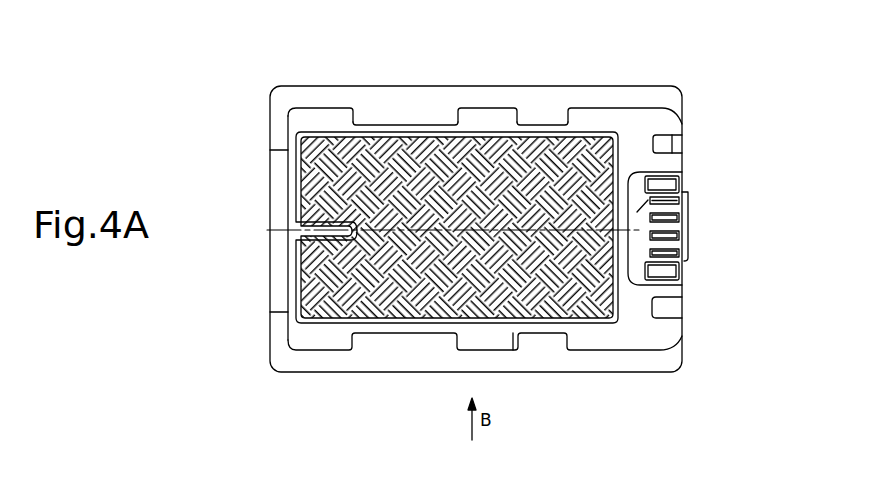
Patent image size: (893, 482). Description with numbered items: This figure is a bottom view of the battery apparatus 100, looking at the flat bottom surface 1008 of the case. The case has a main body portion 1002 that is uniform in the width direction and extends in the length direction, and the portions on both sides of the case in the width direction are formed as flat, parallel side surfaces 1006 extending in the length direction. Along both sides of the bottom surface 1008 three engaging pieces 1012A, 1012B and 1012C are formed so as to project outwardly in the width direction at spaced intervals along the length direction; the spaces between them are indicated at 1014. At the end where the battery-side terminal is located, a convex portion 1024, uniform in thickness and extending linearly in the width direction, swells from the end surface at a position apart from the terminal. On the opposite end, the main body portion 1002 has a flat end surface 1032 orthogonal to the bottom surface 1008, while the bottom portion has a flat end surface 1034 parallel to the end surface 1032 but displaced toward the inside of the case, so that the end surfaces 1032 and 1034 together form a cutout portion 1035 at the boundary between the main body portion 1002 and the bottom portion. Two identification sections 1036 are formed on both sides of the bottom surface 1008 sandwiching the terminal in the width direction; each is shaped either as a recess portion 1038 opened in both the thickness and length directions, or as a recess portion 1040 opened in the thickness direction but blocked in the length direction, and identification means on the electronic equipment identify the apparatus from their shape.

The battery apparatus 100 is at (556, 64).
The main body portion 1002 is at (323, 343).
The side surfaces 1006 is at (572, 373).
The bottom surface 1008 is at (590, 160).
The engaging piece 1012A is at (615, 106).
The engaging piece 1012B is at (497, 108).
The engaging piece 1012C is at (318, 108).
The recess 1014 is at (403, 110).
The convex portion 1024 is at (685, 213).
The end surface 1032 is at (270, 135).
The end surface 1034 is at (285, 188).
The cutout portion 1035 is at (277, 255).
The identification section 1036 is at (738, 226).
The recess portion 1038 is at (675, 311).
The recess portion 1040 is at (677, 146).